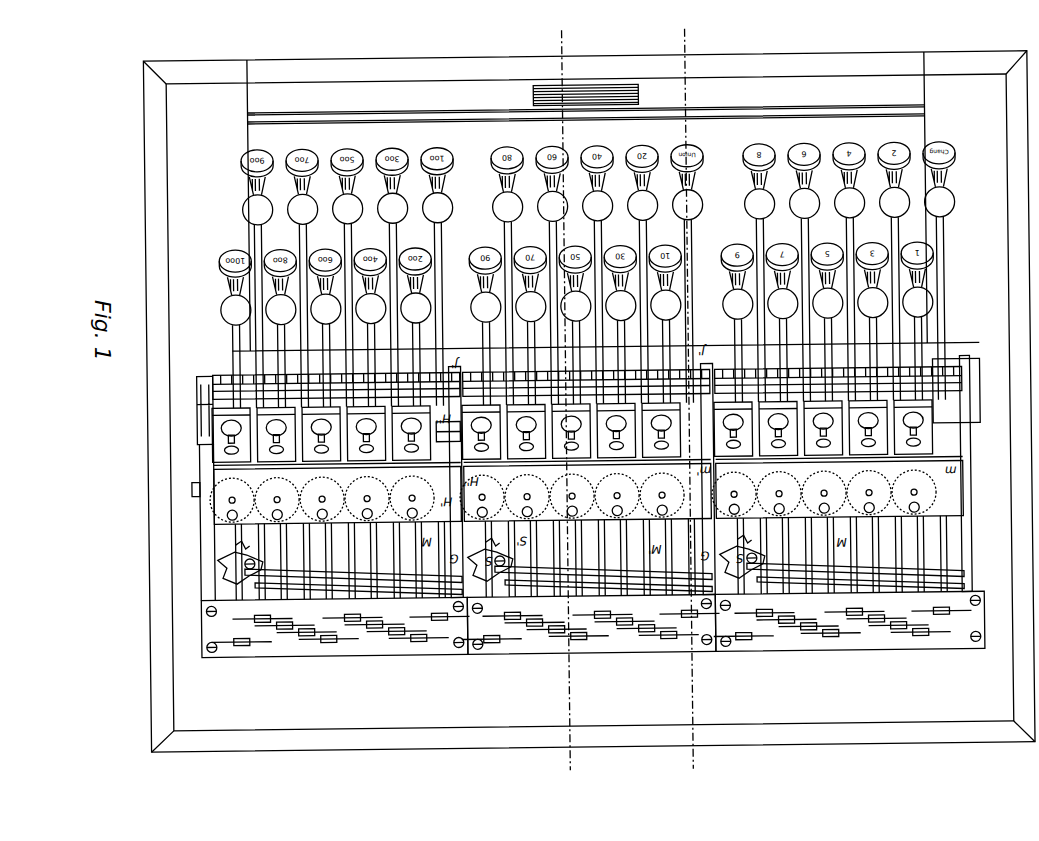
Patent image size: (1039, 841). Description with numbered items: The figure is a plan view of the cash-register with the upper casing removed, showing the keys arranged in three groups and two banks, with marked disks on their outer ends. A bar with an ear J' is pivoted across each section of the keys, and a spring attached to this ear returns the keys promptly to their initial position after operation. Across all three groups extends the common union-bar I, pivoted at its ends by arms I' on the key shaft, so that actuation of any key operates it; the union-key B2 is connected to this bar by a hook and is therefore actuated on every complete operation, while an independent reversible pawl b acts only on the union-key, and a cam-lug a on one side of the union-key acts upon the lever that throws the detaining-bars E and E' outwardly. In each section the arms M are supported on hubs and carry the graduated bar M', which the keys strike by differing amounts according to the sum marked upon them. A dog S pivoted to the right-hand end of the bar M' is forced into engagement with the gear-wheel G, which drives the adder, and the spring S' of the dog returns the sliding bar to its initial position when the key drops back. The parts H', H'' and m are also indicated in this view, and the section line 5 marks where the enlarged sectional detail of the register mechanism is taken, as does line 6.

The cam-lug a is at (589, 401).
The cover plate with guide rails a' is at (586, 135).
The union-key B2 is at (735, 300).
The ear J' is at (336, 375).
The arms I' is at (199, 410).
The union-bar I is at (203, 522).
The type box H' is at (321, 434).
The type box bracket H'' is at (447, 425).
The indicating wheel m is at (327, 498).
The arms M is at (354, 559).
The graduated bar M' is at (359, 573).
The gear-wheel G is at (228, 567).
The dog S is at (245, 566).
The spring S' is at (241, 538).
The detaining-bar E is at (492, 655).
The detaining-bars E' is at (601, 642).
The reversible pawl b is at (970, 551).
The section line 5 5 is at (683, 782).
The section line 6 is at (560, 779).